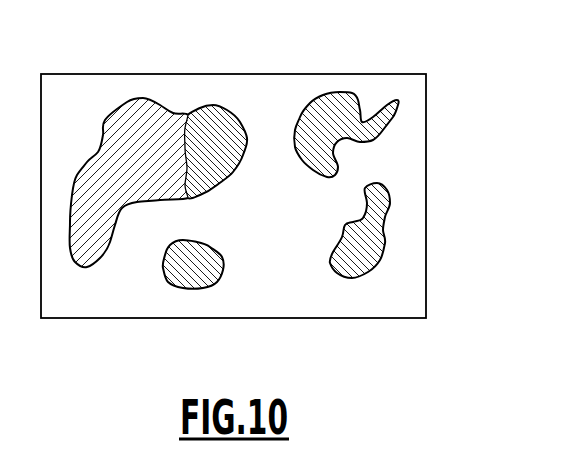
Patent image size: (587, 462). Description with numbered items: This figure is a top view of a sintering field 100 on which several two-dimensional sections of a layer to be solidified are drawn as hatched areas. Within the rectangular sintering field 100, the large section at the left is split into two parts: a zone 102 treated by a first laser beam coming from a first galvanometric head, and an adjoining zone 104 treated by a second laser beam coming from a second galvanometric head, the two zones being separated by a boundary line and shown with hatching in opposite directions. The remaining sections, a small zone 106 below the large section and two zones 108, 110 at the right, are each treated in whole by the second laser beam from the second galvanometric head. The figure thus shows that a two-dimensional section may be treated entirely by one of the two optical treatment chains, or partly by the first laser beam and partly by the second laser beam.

The sintering field 100 is at (427, 262).
The zone 102 is at (145, 132).
The zone 104 is at (230, 112).
The zone 106 is at (176, 283).
The zone 108 is at (340, 107).
The zone 110 is at (378, 202).